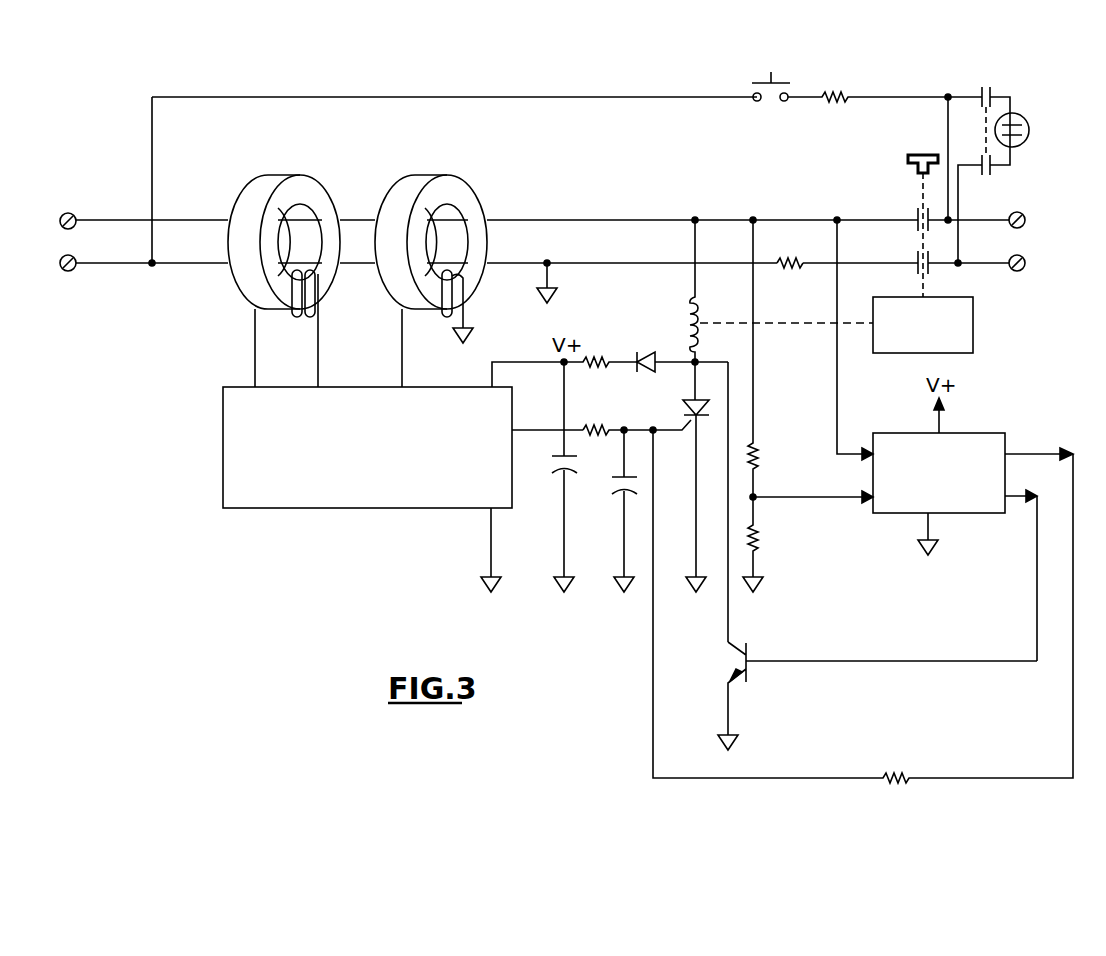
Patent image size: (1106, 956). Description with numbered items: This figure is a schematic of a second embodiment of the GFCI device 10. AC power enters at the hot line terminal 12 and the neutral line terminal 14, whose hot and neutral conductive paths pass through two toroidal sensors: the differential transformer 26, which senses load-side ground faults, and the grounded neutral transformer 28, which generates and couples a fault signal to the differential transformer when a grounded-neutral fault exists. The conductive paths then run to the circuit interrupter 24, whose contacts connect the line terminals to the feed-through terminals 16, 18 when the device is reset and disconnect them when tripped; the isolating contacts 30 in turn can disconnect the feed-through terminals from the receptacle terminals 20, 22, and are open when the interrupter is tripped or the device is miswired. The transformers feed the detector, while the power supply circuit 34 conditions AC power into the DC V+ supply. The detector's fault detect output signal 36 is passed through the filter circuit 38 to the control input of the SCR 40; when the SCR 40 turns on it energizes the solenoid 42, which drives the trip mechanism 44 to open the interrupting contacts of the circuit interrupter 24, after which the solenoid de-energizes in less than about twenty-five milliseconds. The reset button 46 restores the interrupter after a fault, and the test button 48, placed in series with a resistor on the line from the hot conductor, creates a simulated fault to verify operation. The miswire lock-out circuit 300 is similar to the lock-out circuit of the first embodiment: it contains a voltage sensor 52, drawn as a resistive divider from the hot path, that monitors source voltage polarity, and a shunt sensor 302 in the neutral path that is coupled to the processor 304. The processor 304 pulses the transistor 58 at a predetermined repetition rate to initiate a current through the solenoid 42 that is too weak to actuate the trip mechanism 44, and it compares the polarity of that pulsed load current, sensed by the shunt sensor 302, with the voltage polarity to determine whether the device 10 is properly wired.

The device 10 is at (388, 90).
The hot line terminal 12 is at (76, 215).
The neutral line terminal 14 is at (76, 270).
The feed-through terminal 16 is at (1025, 214).
The feed-through terminal 18 is at (1025, 270).
The receptacle terminal 20 is at (1019, 116).
The receptacle terminal 22 is at (1024, 142).
The circuit interrupter 24 is at (909, 228).
The differential transformer 26 is at (303, 182).
The grounded neutral transformer 28 is at (449, 182).
The isolating contacts 30 is at (990, 88).
The power supply circuit 34 is at (582, 358).
The fault detect output signal 36 is at (514, 427).
The filter circuit 38 is at (613, 485).
The SCR 40 is at (684, 409).
The solenoid 42 is at (690, 310).
The trip mechanism 44 is at (974, 320).
The reset button 46 is at (908, 158).
The test button 48 is at (749, 90).
The voltage sensor 52 is at (763, 495).
The transistor 58 is at (750, 652).
The miswire lock-out circuit 300 is at (989, 425).
The shunt sensor 302 is at (778, 256).
The processor 304 is at (902, 500).